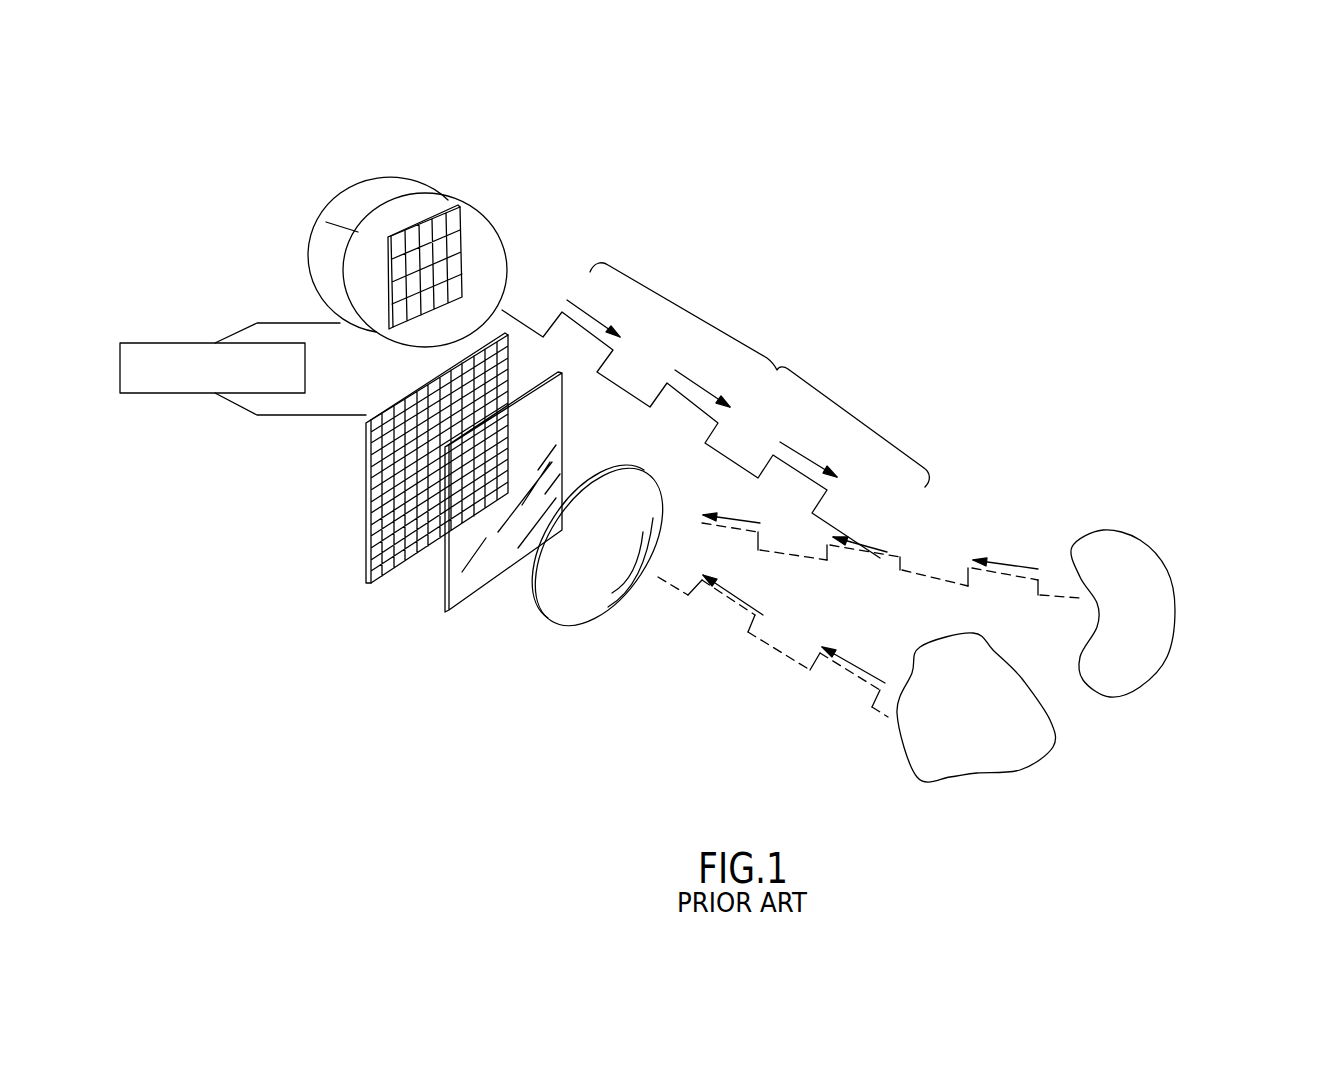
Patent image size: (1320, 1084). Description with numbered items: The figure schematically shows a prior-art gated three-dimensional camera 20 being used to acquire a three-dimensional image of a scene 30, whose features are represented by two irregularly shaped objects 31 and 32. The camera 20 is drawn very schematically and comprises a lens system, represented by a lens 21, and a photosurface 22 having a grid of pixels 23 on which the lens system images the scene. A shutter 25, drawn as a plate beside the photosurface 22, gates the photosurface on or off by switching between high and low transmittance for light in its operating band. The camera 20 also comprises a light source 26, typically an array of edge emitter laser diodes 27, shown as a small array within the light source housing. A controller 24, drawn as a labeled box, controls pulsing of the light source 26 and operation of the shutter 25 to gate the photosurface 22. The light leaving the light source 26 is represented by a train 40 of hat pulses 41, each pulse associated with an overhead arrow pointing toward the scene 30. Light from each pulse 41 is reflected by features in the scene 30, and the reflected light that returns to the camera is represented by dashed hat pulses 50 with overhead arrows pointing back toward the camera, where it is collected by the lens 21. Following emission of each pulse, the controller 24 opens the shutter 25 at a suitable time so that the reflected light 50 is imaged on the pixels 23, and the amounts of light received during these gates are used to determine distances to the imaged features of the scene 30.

The gated 3D camera 20 is at (793, 207).
The lens 21 is at (565, 640).
The photosurface 22 is at (343, 520).
The pixels 23 is at (385, 497).
The controller 24 is at (240, 343).
The shutter 25 is at (445, 585).
The light source 26 is at (455, 183).
The edge emitter laser diodes 27 is at (457, 270).
The scene 30 is at (1133, 747).
The object 31 is at (1152, 621).
The object 32 is at (985, 727).
The train of light pulses 40 is at (777, 370).
The light pulses 41 is at (610, 356).
The reflected light pulses 50 is at (730, 603).